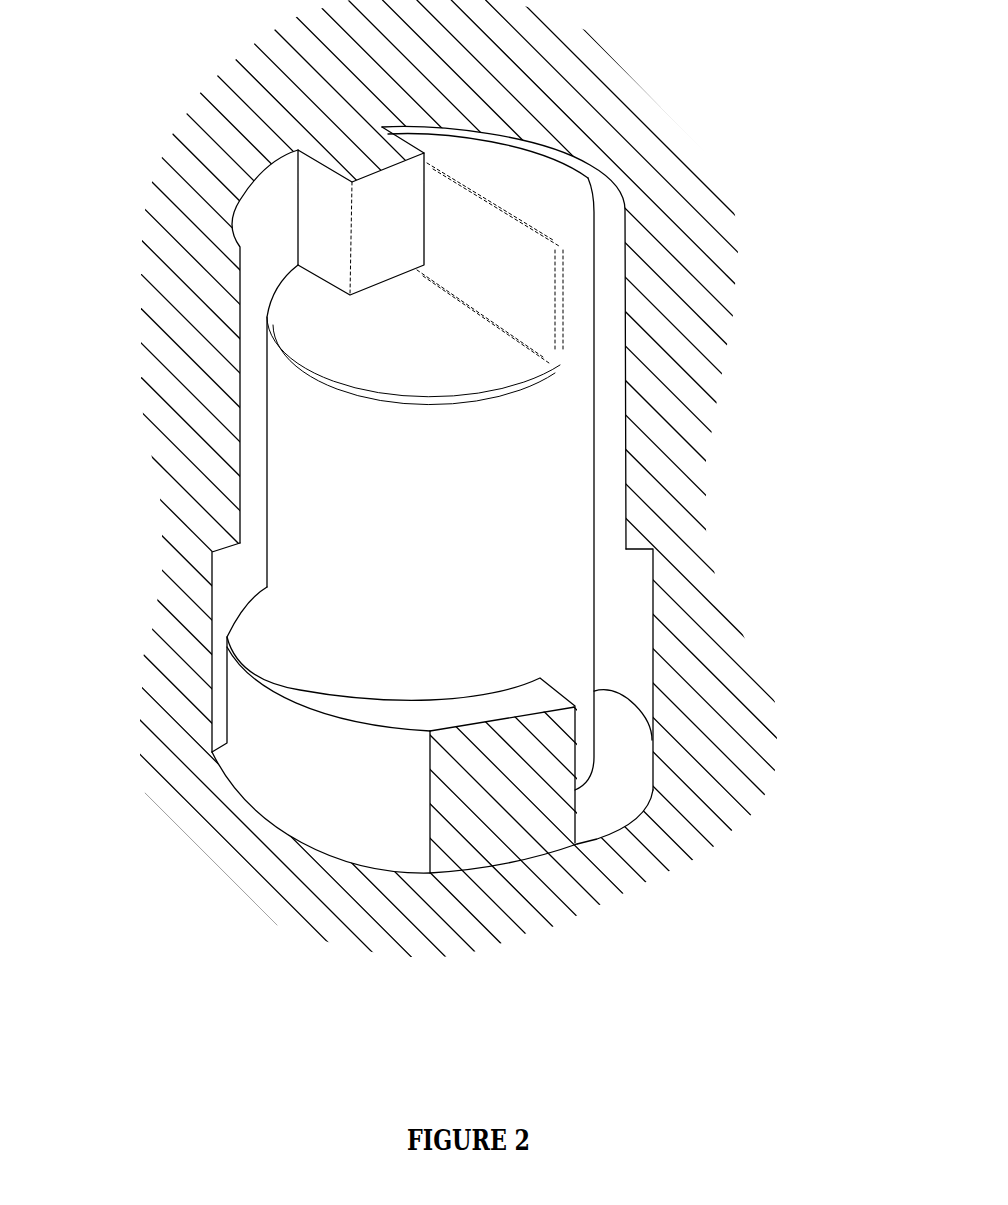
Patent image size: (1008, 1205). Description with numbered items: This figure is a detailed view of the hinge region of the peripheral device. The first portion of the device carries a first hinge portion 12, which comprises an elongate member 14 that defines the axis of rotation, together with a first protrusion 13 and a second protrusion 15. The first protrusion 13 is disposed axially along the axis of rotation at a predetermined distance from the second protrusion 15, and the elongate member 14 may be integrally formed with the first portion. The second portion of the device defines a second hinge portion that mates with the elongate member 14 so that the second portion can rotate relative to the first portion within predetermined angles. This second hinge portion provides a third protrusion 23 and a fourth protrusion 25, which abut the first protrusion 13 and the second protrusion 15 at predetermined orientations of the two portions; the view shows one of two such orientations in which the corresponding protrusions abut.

The first hinge portion 12 is at (553, 477).
The first protrusion 13 is at (537, 177).
The elongate member 14 is at (267, 483).
The second protrusion 15 is at (283, 778).
The third protrusion 23 is at (373, 232).
The fourth protrusion 25 is at (505, 822).